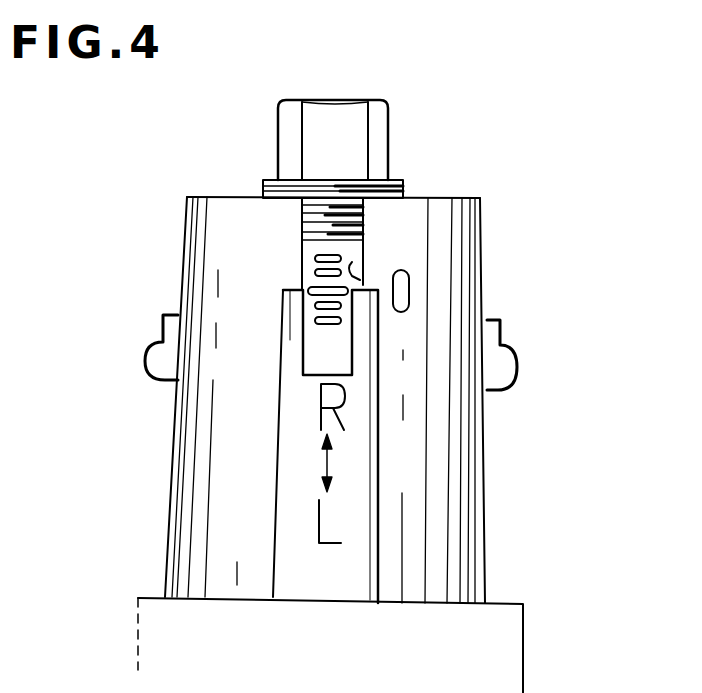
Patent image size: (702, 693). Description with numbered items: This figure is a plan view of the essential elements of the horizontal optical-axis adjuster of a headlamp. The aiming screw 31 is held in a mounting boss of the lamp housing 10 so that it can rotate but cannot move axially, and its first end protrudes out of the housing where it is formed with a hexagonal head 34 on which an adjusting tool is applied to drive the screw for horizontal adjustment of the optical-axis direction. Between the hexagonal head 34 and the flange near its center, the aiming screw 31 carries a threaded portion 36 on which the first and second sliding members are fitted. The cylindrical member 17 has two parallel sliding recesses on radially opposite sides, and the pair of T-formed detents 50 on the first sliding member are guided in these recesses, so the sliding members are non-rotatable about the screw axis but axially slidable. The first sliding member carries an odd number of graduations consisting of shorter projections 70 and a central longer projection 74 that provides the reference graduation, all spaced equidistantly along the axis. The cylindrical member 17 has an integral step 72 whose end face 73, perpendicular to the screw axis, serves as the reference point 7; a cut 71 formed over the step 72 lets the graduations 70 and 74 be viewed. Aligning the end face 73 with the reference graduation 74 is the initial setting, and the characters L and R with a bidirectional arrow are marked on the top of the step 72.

The lamp housing 10 is at (138, 598).
The cylindrical member 17 is at (482, 286).
The aiming screw 31 is at (355, 185).
The hexagonal head 34 is at (388, 123).
The threaded portion 36 is at (363, 222).
The T-formed detents 50 is at (147, 362).
The reference point 7 is at (220, 428).
The end face 73 is at (283, 290).
The central longer projection 74 is at (283, 307).
The shorter projections 70 is at (318, 272).
The cut 71 is at (358, 272).
The step 72 is at (358, 437).